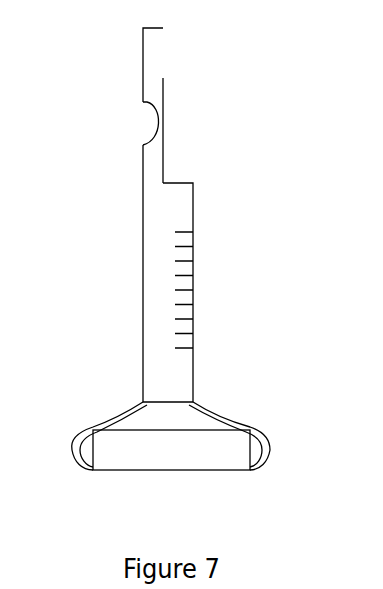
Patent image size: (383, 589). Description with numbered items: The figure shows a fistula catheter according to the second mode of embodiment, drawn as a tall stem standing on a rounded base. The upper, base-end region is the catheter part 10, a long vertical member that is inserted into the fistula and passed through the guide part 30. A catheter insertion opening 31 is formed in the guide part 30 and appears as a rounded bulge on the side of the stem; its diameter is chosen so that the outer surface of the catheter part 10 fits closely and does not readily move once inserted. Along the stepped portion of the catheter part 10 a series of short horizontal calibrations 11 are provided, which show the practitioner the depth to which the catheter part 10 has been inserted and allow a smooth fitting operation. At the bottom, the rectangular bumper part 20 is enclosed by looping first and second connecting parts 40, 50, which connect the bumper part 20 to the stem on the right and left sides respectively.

The catheter part 10 is at (183, 209).
The calibrations 11 is at (185, 258).
The bumper part 20 is at (143, 467).
The guide part 30 is at (148, 387).
The catheter insertion opening 31 is at (148, 122).
The first connecting part 40 is at (268, 443).
The second connecting part 50 is at (77, 447).